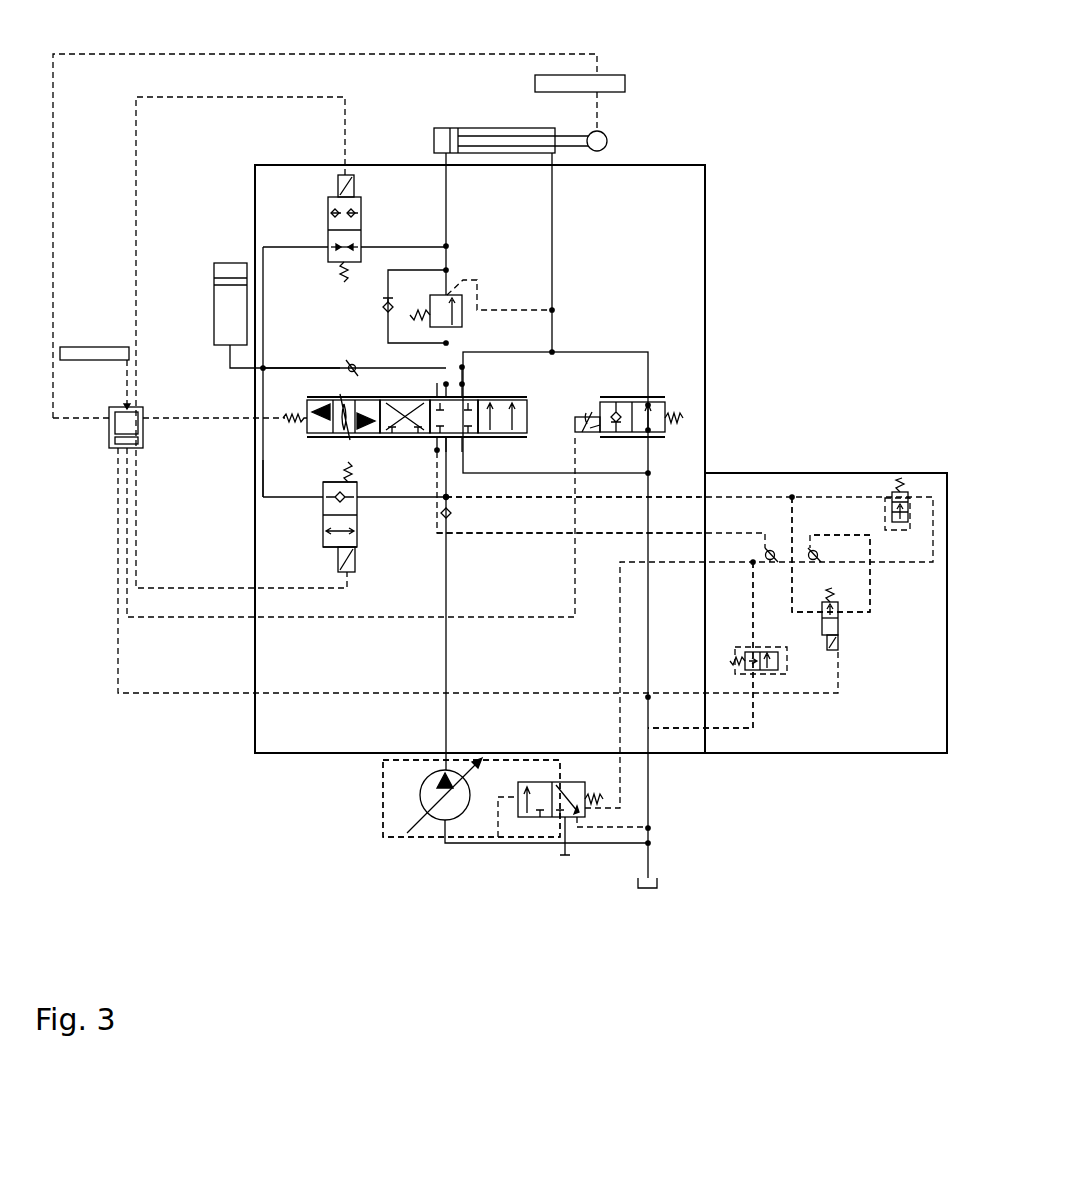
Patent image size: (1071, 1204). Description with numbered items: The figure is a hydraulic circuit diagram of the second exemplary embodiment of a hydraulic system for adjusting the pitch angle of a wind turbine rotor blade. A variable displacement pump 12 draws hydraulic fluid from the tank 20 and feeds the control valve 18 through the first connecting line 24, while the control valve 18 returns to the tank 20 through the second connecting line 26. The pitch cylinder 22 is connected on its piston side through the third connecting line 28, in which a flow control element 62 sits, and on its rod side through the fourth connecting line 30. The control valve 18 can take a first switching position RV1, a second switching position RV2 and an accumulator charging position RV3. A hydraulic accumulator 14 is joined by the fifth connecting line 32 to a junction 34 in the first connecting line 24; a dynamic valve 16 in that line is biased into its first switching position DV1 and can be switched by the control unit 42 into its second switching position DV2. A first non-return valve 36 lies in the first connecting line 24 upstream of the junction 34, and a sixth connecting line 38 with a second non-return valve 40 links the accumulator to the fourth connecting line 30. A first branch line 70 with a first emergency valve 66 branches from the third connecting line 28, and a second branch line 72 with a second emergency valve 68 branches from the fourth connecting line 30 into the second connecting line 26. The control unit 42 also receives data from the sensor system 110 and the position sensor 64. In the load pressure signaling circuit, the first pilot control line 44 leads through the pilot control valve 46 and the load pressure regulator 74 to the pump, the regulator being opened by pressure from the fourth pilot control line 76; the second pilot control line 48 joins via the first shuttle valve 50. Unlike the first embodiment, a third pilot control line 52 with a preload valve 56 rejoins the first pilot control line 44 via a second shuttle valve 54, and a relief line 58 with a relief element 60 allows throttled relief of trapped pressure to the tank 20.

The variable displacement pump 12 is at (437, 823).
The hydraulic accumulator 14 is at (214, 292).
The dynamic valve 16 is at (323, 528).
The control valve 18 is at (486, 392).
The tank 20 is at (650, 878).
The pitch cylinder 22 is at (488, 128).
The first connecting line 24 is at (447, 590).
The second connecting line 26 is at (650, 610).
The third connecting line 28 is at (447, 196).
The fourth connecting line 30 is at (553, 237).
The fifth connecting line 32 is at (263, 468).
The junction 34 is at (447, 497).
The first non-return valve 36 is at (452, 513).
The sixth connecting line 38 is at (287, 366).
The second non-return valve 40 is at (352, 362).
The control unit 42 is at (80, 485).
The first pilot control line 44 is at (672, 496).
The pilot control valve 46 is at (838, 630).
The second pilot control line 48 is at (672, 538).
The first shuttle valve 50 is at (770, 550).
The third pilot control line 52 is at (815, 497).
The second shuttle valve 54 is at (818, 560).
The preload valve 56 is at (905, 492).
The relief line 58 is at (750, 622).
The relief element 60 is at (778, 660).
The flow control element 62 is at (462, 282).
The position sensor 64 is at (625, 77).
The first emergency valve 66 is at (361, 210).
The second emergency valve 68 is at (662, 400).
The first branch line 70 is at (288, 246).
The second branch line 72 is at (605, 352).
The load pressure regulator 74 is at (565, 856).
The fourth pilot control line 76 is at (383, 808).
The sensor system 110 is at (82, 346).
The first switching position RV1 is at (527, 413).
The second switching position RV2 is at (410, 438).
The accumulator charging position RV3 is at (476, 434).
The first switching position DV1 is at (337, 486).
The second switching position DV2 is at (357, 547).